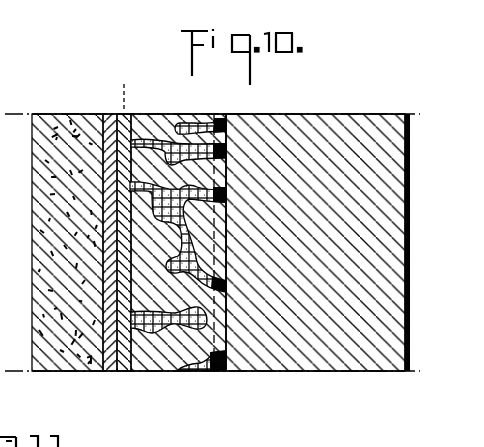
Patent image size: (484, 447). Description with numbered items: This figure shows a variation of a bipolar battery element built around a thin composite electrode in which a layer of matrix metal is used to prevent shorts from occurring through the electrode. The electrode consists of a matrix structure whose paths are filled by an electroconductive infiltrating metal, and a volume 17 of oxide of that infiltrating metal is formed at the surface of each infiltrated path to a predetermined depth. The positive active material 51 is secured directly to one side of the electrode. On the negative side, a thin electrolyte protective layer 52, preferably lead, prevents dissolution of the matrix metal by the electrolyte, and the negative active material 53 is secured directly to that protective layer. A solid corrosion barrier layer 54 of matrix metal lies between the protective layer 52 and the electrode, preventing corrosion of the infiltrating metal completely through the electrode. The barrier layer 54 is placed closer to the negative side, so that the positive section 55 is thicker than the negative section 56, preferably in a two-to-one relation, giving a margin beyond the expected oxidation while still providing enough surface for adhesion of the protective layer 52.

The volume of oxide 17 is at (237, 113).
The positive active material 51 is at (350, 360).
The electrolyte protective layer 52 is at (110, 372).
The negative active material 53 is at (57, 372).
The corrosion barrier layer 54 is at (125, 372).
The positive section 55 is at (141, 98).
The negative section 56 is at (102, 100).